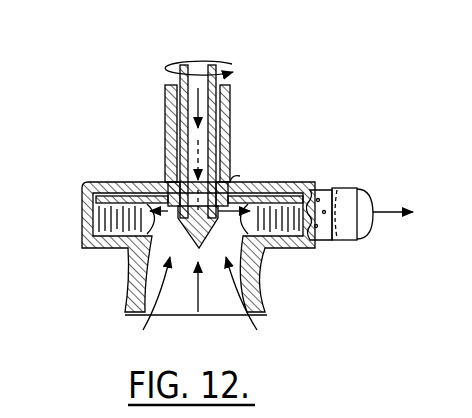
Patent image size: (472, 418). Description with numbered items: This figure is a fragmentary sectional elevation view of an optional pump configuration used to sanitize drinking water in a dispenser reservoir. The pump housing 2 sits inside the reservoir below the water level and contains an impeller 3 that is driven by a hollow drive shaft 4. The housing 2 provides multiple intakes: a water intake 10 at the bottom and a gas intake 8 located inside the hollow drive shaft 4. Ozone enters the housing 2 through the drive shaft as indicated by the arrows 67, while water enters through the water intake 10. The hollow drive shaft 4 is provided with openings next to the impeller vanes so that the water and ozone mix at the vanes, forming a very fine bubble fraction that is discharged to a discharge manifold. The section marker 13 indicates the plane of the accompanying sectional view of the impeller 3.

The housing 2 is at (165, 142).
The impeller 3 is at (123, 236).
The hollow drive shaft 4 is at (186, 63).
The arrows 67 is at (166, 100).
The gas intake 8 is at (231, 102).
The water intake 10 is at (186, 292).
The section line 13- 13 is at (75, 195).